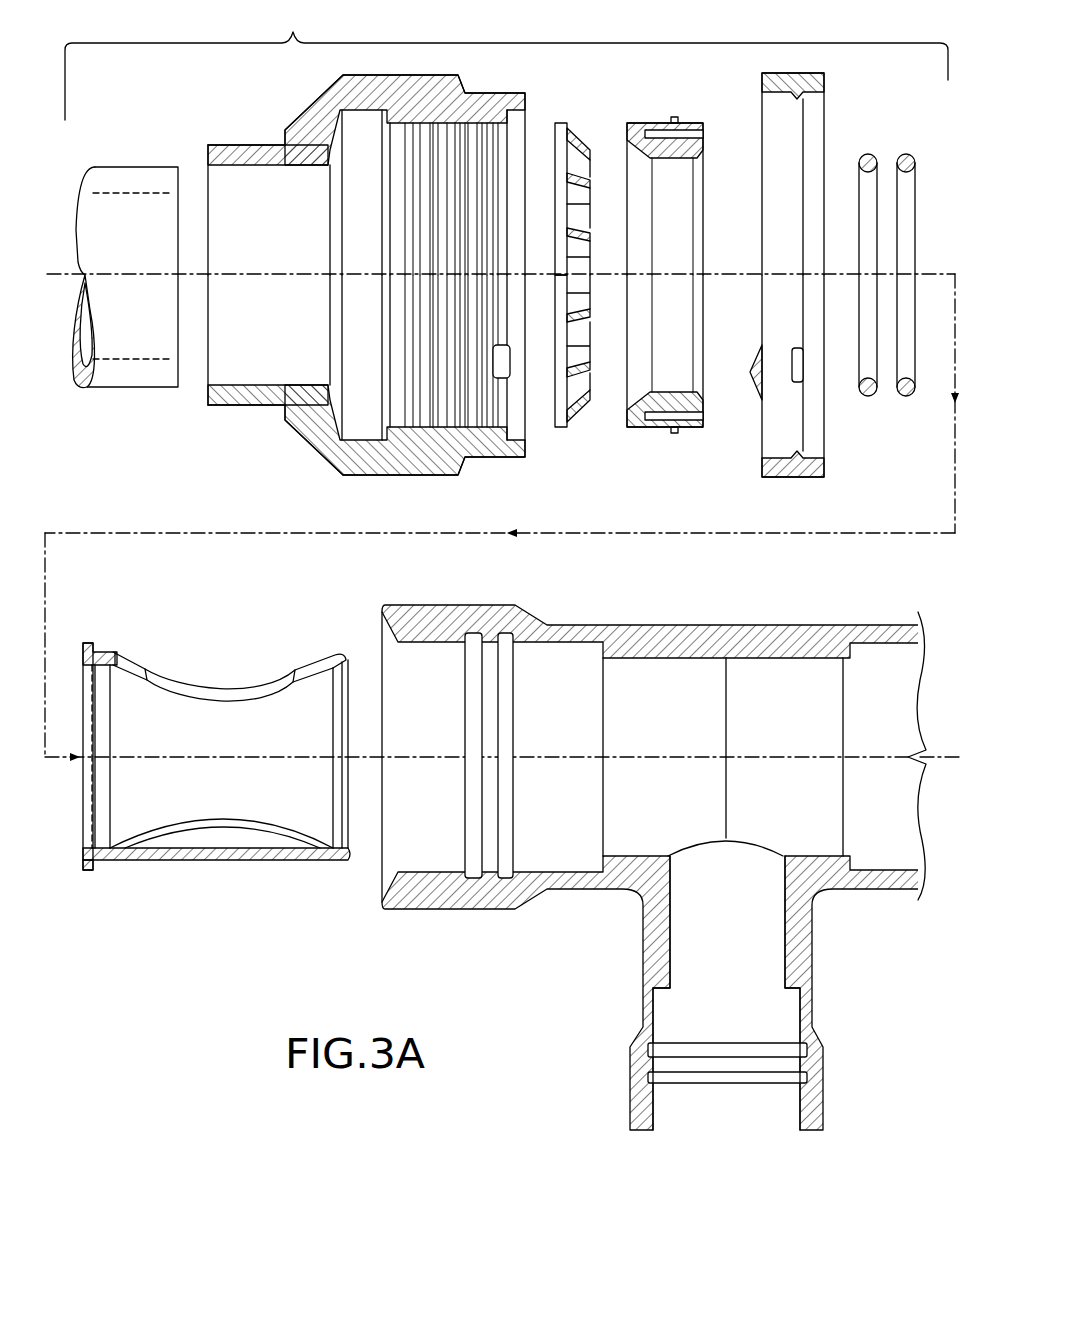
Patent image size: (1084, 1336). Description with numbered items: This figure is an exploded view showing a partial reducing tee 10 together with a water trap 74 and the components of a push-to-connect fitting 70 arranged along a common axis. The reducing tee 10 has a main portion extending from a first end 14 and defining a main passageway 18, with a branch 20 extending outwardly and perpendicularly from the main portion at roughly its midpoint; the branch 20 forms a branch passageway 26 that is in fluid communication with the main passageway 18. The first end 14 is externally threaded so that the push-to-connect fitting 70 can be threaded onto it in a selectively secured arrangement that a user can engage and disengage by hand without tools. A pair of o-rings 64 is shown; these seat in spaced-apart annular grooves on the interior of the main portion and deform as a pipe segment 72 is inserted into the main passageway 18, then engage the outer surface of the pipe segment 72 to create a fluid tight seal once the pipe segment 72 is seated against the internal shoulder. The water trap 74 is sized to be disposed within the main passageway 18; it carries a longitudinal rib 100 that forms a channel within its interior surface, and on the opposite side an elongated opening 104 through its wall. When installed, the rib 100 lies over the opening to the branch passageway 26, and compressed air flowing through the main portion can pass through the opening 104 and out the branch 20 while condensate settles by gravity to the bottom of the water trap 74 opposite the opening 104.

The reducing tee 10 is at (866, 936).
The first end 14 is at (385, 622).
The main passageway 18 is at (567, 716).
The branch 20 is at (643, 965).
The branch passageway 26 is at (737, 947).
The o-rings 64 is at (906, 155).
The push-to-connect fitting 70 is at (292, 36).
The pipe segment 72 is at (110, 181).
The water trap 74 is at (175, 884).
The rib 100 is at (250, 838).
The opening 104 is at (265, 688).